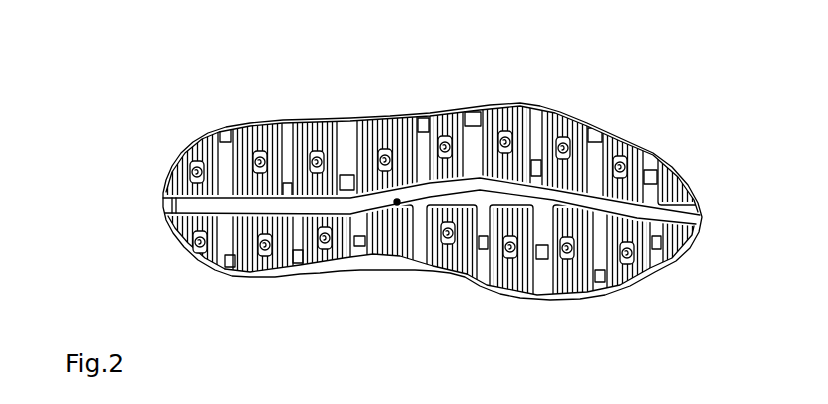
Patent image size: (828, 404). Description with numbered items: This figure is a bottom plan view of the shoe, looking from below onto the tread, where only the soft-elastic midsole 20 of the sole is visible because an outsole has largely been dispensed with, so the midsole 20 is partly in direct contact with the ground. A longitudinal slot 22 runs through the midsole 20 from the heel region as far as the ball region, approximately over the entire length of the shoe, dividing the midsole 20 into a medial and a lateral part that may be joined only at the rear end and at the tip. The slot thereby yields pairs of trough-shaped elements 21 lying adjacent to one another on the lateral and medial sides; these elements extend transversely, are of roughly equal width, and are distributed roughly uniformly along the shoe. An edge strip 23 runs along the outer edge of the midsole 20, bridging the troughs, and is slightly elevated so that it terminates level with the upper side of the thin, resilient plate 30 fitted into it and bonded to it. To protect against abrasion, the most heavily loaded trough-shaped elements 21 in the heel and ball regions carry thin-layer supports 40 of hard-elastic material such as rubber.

The midsole 20 is at (168, 268).
The trough-shaped elements 21 is at (443, 133).
The longitudinal slot 22 is at (352, 208).
The edge strip 23 is at (475, 117).
The plate 30 is at (397, 202).
The thin-layer supports 40 is at (235, 140).